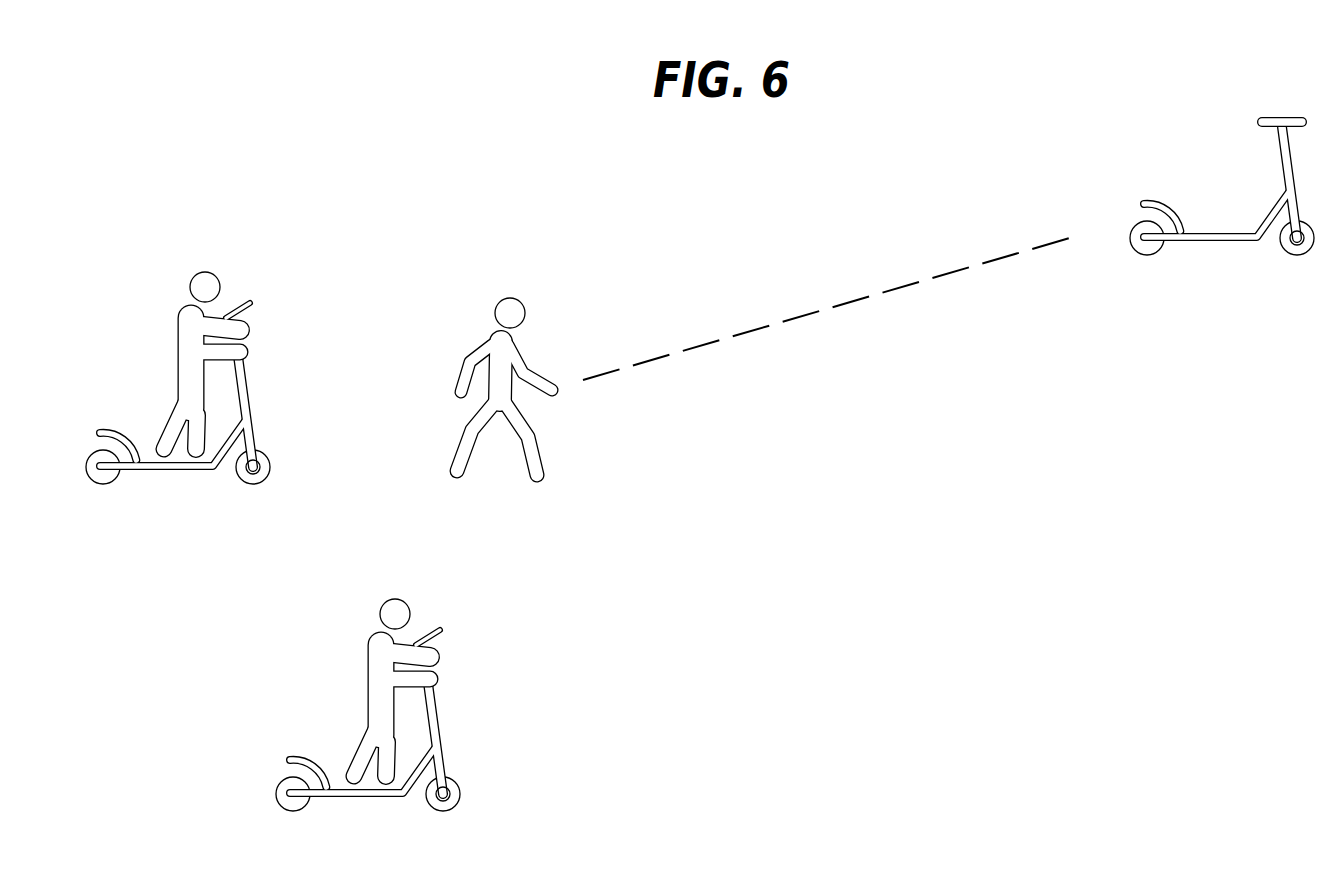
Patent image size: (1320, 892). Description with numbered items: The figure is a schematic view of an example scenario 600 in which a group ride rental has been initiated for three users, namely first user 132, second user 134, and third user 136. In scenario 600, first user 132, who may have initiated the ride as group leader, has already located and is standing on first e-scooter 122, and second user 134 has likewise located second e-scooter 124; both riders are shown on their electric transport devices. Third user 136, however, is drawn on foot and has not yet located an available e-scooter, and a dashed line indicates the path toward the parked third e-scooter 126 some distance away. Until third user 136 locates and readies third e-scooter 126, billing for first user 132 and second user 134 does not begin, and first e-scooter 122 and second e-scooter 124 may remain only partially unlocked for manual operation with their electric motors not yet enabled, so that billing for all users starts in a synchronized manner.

The scenario 600 is at (460, 132).
The first e-scooter 122 is at (250, 396).
The second e-scooter 124 is at (437, 725).
The third e-scooter 126 is at (1282, 158).
The first user 132 is at (177, 325).
The second user 134 is at (367, 662).
The third user 136 is at (480, 352).